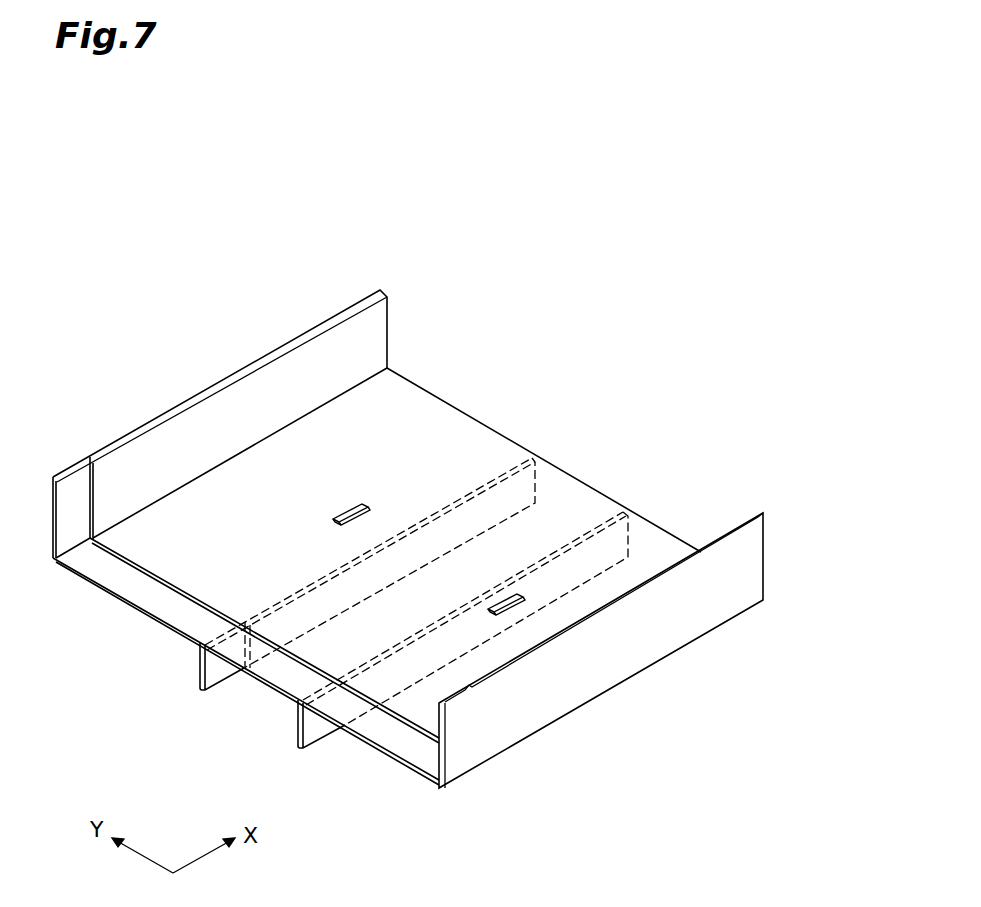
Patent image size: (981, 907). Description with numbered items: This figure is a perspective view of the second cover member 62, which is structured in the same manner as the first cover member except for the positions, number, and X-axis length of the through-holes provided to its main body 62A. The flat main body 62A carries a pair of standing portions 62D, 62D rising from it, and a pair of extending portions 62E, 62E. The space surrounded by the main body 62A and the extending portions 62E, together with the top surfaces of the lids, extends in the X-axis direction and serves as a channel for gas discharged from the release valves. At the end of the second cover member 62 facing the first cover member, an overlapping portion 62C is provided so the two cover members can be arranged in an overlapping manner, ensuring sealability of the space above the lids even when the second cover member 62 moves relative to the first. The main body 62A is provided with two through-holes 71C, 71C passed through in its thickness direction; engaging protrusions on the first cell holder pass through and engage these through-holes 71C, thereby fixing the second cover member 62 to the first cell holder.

The second cover member 62 is at (442, 532).
The main body 62A is at (473, 440).
The overlapping portion 62C is at (174, 607).
The standing portion 62D is at (279, 378).
The extending portion 62E is at (222, 677).
The through-hole 71C is at (343, 512).